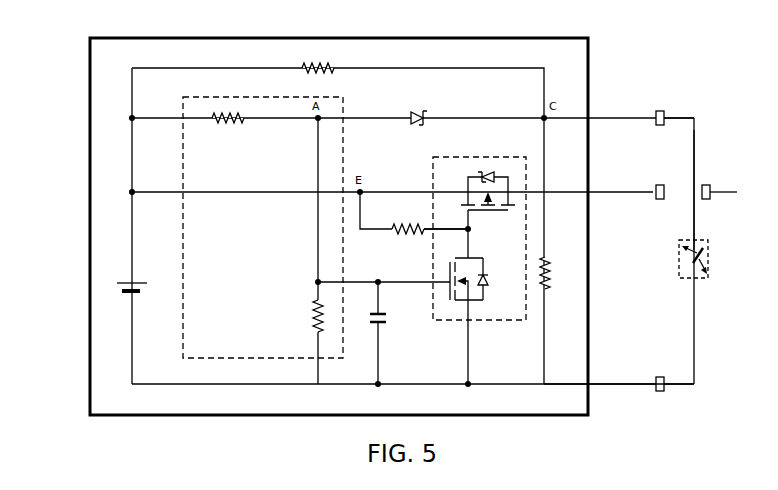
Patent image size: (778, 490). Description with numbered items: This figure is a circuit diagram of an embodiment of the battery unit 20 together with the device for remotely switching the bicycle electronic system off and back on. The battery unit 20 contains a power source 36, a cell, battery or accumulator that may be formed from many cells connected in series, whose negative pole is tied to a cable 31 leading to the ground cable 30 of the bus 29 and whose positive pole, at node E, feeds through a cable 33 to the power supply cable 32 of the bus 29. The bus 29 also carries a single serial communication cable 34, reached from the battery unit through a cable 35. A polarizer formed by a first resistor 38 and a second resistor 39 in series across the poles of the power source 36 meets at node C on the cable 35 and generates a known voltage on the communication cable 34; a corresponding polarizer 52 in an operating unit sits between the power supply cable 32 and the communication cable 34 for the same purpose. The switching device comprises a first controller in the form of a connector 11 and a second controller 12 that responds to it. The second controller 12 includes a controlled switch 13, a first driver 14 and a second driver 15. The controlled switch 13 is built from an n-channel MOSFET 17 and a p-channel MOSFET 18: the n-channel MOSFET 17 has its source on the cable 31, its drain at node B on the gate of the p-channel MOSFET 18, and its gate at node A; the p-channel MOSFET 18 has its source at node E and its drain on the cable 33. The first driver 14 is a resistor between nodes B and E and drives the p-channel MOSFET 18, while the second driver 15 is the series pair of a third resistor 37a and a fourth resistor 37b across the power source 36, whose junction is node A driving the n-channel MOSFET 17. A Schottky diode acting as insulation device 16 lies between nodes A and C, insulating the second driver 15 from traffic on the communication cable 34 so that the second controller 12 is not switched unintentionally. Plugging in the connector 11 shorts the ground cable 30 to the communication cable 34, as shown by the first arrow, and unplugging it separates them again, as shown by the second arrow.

The connector 11 is at (679, 258).
The second means or controller for switching-off/(re)switching-on 12 is at (377, 88).
The controlled switch 13 is at (480, 152).
The first driver 14 is at (400, 226).
The second driver 15 is at (262, 92).
The insulation device 16 is at (418, 112).
The n-channel MOSFET 17 is at (483, 292).
The p-channel MOSFET 18 is at (506, 178).
The battery unit 20 is at (88, 190).
The bus 29 is at (683, 94).
The ground cable 30 is at (694, 342).
The cable leading to the ground cable 31 is at (560, 384).
The power supply cable 32 is at (737, 192).
The cable leading to the power supply cable 33 is at (569, 192).
The serial communication cable 34 is at (695, 165).
The cable leading to the communication cable 35 is at (569, 118).
The power source 36 is at (126, 298).
The resistor R3 37a is at (216, 112).
The resistor R4 37b is at (317, 303).
The resistor R1 38 is at (316, 62).
The resistor R2 39 is at (550, 266).
The polarizer 52 is at (450, 232).